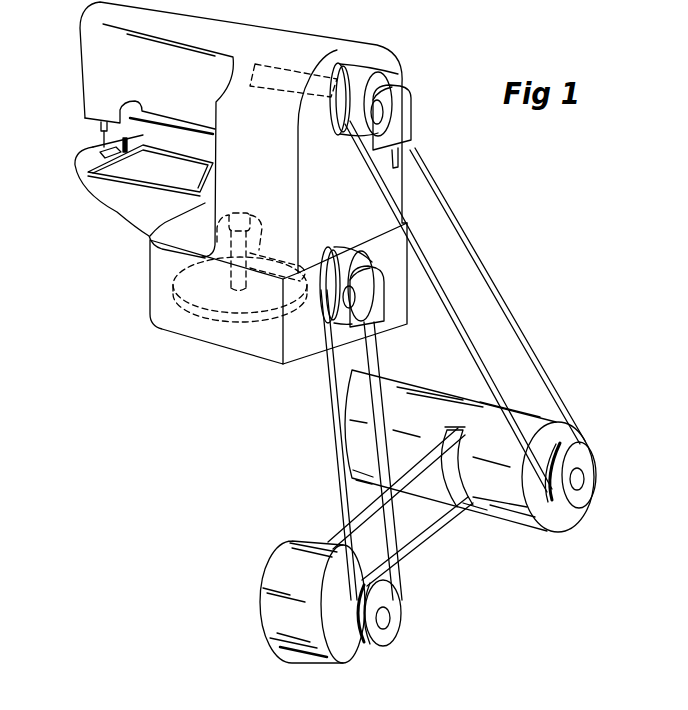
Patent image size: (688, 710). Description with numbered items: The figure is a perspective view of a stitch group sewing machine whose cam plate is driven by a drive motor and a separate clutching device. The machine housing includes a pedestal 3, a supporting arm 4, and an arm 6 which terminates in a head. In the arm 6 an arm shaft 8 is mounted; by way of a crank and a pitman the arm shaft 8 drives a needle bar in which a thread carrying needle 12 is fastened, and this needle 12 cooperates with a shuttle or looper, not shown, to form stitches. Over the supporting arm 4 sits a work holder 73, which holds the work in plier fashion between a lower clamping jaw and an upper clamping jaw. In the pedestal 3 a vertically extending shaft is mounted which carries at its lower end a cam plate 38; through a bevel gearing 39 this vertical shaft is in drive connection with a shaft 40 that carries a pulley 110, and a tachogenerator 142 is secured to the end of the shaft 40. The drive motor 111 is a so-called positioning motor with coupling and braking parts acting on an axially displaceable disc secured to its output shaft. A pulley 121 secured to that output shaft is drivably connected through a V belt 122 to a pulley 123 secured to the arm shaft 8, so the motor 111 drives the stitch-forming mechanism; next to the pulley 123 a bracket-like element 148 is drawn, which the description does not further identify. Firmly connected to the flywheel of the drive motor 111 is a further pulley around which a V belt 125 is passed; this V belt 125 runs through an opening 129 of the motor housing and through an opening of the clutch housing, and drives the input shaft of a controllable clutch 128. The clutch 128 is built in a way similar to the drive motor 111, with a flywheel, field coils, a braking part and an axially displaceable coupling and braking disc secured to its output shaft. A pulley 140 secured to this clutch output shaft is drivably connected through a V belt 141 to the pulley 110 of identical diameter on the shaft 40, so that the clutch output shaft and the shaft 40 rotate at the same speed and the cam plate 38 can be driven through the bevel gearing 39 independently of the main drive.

The pedestal 3 is at (273, 352).
The supporting arm 4 is at (143, 218).
The arm 6 is at (247, 32).
The arm shaft 8 is at (289, 71).
The thread carrying needle 12 is at (107, 146).
The cam plate 38 is at (195, 315).
The bevel gearing 39 is at (260, 233).
The shaft 40 is at (303, 249).
The work holder 73 is at (129, 186).
The pulley 110 is at (352, 244).
The drive motor 111 is at (511, 526).
The pulley 121 is at (584, 488).
The V belt 122 is at (540, 368).
The pulley 123 is at (339, 65).
The V belt 125 is at (410, 540).
The controllable clutch 128 is at (258, 600).
The opening 129 is at (460, 506).
The pulley 140 is at (385, 633).
The V belt 141 is at (342, 492).
The tachogenerator 142 is at (378, 294).
The bracket 148 is at (402, 123).